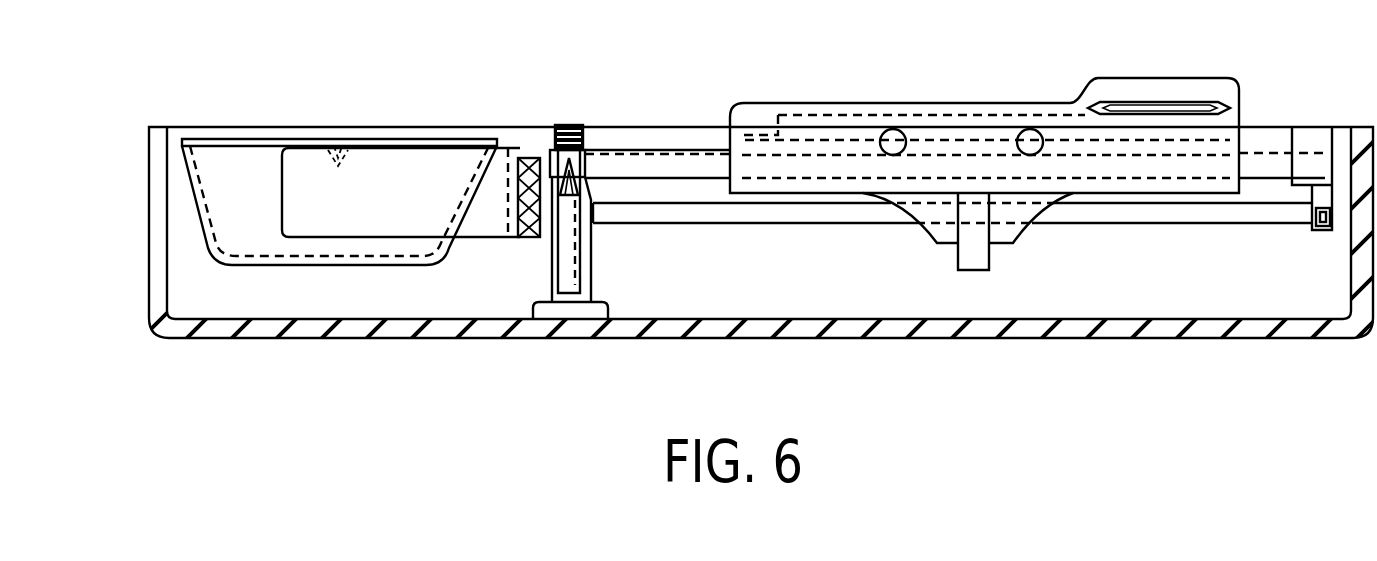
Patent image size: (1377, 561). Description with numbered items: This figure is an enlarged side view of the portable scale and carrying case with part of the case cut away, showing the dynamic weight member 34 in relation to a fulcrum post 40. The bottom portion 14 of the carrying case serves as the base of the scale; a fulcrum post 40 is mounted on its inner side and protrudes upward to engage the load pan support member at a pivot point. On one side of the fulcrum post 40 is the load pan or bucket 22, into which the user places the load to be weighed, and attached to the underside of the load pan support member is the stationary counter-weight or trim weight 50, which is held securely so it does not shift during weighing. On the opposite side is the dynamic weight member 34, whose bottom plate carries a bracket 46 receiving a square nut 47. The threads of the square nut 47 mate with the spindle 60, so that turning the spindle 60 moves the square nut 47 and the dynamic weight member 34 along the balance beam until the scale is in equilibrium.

The bottom portion 14 is at (146, 288).
The load pan or bucket 22 is at (226, 158).
The dynamic weight member or slider 34 is at (1162, 64).
The fulcrum post 40 is at (557, 280).
The bracket 46 is at (1010, 232).
The square nut 47 is at (970, 262).
The counter-weight or trim weight 50 is at (520, 240).
The spindle 60 is at (798, 217).